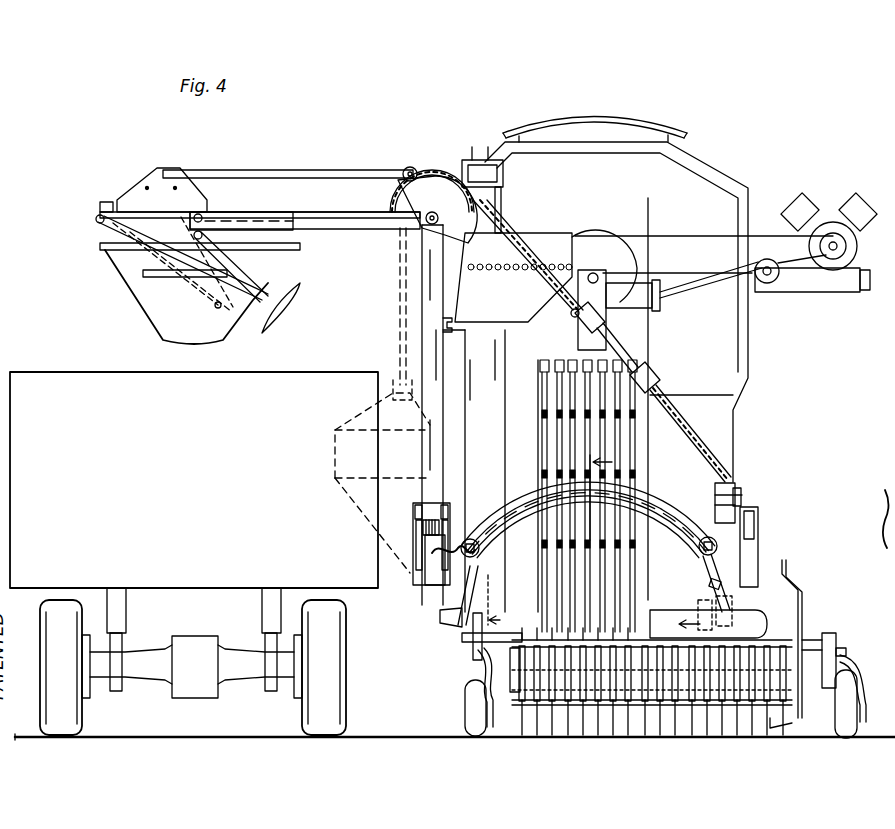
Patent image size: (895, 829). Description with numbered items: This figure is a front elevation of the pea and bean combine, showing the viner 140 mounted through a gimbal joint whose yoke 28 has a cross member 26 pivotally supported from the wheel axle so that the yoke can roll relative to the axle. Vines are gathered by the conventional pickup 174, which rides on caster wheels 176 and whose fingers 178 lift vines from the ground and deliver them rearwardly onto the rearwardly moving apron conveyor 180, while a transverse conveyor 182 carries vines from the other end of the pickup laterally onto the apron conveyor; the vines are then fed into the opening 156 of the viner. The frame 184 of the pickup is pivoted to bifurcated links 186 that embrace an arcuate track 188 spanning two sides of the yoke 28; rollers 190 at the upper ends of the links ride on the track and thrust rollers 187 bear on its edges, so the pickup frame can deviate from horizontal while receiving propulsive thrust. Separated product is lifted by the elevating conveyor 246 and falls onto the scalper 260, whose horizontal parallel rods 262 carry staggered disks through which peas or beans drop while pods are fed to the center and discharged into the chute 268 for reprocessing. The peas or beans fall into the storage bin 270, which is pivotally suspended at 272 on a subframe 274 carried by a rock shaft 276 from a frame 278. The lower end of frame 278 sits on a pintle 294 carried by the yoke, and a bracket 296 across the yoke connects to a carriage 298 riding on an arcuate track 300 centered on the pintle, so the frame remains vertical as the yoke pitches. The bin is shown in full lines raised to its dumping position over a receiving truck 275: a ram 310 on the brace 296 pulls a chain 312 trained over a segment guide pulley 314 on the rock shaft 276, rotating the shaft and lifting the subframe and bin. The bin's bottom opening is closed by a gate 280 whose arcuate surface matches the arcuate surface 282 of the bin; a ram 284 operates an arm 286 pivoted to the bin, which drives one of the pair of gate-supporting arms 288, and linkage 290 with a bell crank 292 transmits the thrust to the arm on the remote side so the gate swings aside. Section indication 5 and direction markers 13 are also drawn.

The section line 5 is at (556, 539).
The direction arrow 13 is at (460, 529).
The cross member 26 is at (886, 506).
The yoke 28 is at (428, 583).
The viner 140 is at (695, 183).
The opening 156 is at (638, 344).
The pickup 174 is at (770, 660).
The caster wheels 176 is at (465, 716).
The fingers 178 is at (799, 721).
The apron conveyor 180 is at (620, 623).
The transverse conveyor 182 is at (775, 604).
The frame 184 is at (470, 644).
The links 186 is at (440, 611).
The thrust rollers 187 is at (470, 598).
The arcuate track 188 is at (505, 510).
The rollers 190 is at (476, 556).
The elevating conveyor 246 is at (498, 174).
The scalper 260 is at (545, 255).
The parallel rods 262 is at (520, 270).
The chute 268 is at (604, 318).
The storage bin 270 is at (340, 486).
The pivotal suspension 272 is at (200, 216).
The subframe 274 is at (355, 224).
The receiving truck 275 is at (50, 388).
The rock shaft 276 is at (420, 232).
The frame 278 is at (432, 346).
The gate 280 is at (270, 314).
The arcuate surface 282 is at (207, 335).
The ram 284 is at (125, 256).
The arm 286 is at (200, 288).
The arms 288 is at (268, 268).
The linkage 290 is at (138, 308).
The bell crank 292 is at (96, 224).
The pintle 294 is at (414, 578).
The bracket 296 is at (522, 238).
The carriage 298 is at (736, 486).
The arcuate track 300 is at (742, 498).
The ram 310 is at (625, 356).
The chain 312 is at (572, 238).
The segment guide pulley 314 is at (433, 192).